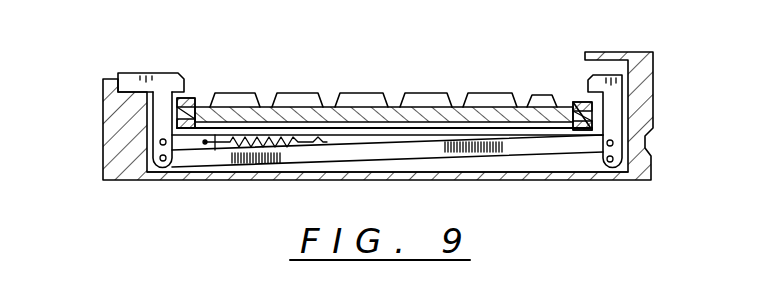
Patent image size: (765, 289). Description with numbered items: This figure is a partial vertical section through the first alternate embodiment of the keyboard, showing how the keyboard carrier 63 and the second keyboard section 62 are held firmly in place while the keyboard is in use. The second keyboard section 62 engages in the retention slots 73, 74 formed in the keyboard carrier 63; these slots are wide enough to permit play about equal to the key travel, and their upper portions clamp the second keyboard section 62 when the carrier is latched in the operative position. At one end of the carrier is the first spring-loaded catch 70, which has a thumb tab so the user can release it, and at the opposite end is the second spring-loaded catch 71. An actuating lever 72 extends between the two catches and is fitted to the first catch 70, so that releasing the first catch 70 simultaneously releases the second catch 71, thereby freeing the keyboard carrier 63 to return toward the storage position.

The second keyboard section 62 is at (355, 110).
The keyboard carrier 63 is at (583, 114).
The first spring-loaded catch 70 is at (134, 78).
The second spring-loaded catch 71 is at (612, 82).
The actuating lever 72 is at (512, 147).
The retention slot 73 is at (578, 115).
The retention slot 74 is at (172, 112).